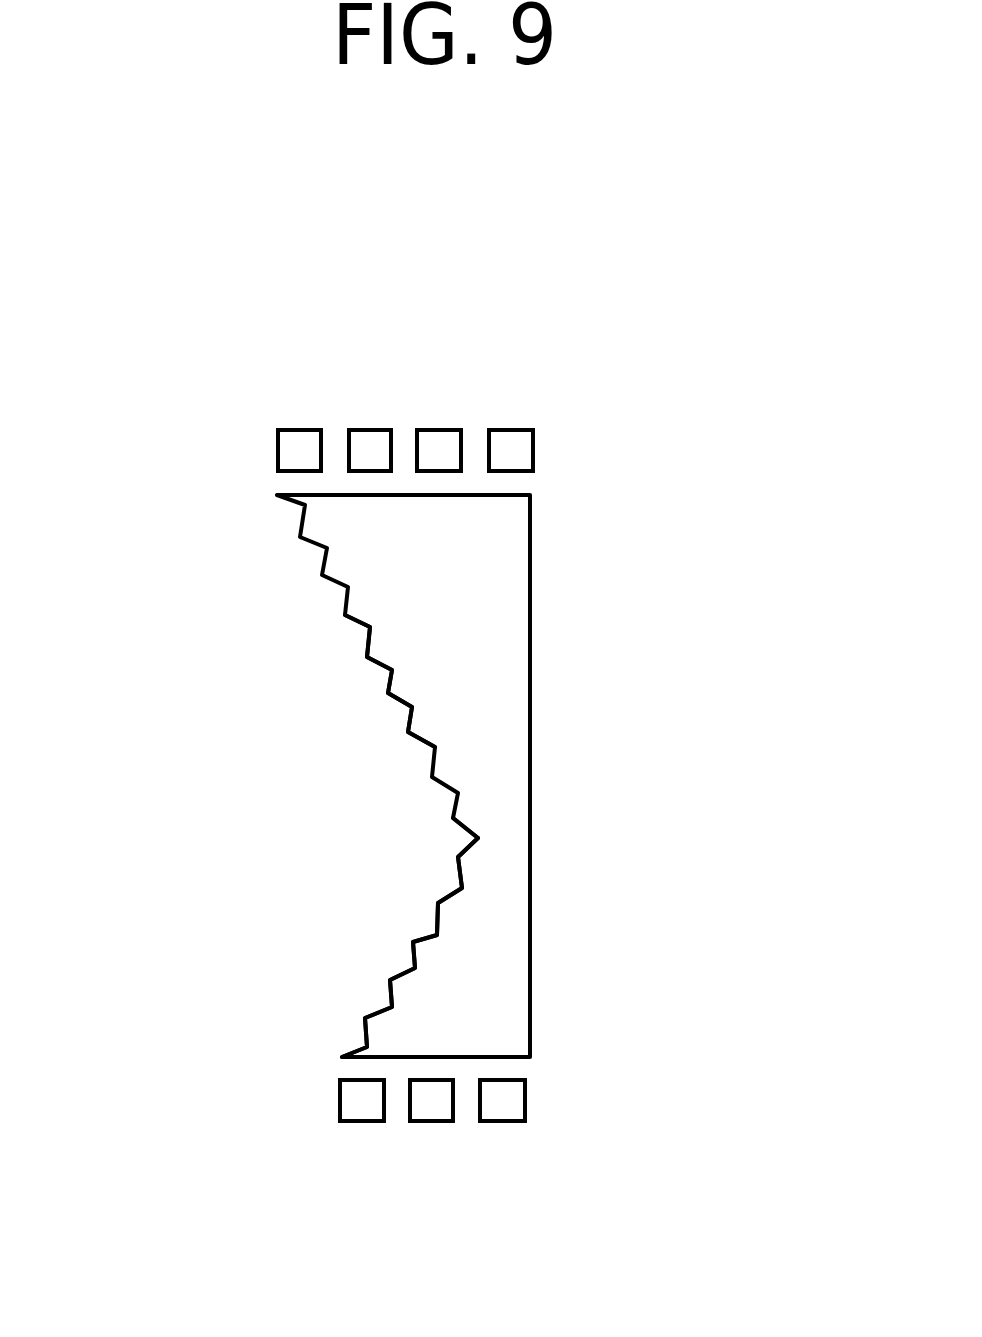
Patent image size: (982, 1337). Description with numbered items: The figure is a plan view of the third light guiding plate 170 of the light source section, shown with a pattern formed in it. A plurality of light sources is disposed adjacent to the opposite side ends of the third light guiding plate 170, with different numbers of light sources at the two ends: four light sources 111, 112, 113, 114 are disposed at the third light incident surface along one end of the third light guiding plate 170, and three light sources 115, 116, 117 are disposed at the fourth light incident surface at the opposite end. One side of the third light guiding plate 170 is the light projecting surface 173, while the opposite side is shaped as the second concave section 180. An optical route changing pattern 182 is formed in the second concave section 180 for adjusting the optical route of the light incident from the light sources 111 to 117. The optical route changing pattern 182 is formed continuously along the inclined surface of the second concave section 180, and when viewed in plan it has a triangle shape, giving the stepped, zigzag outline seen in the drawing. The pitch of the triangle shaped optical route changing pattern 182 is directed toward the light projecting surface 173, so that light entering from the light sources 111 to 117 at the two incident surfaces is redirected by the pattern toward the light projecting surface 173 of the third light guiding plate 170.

The light source 111 is at (293, 445).
The light source 112 is at (376, 446).
The light source 113 is at (432, 448).
The light source 114 is at (517, 450).
The light source 115 is at (367, 1107).
The light source 116 is at (423, 1107).
The light source 117 is at (505, 1112).
The third light guiding plate 170 is at (605, 662).
The light projecting surface 173 is at (530, 772).
The second concave section 180 is at (438, 903).
The optical route changing pattern 182 is at (388, 693).